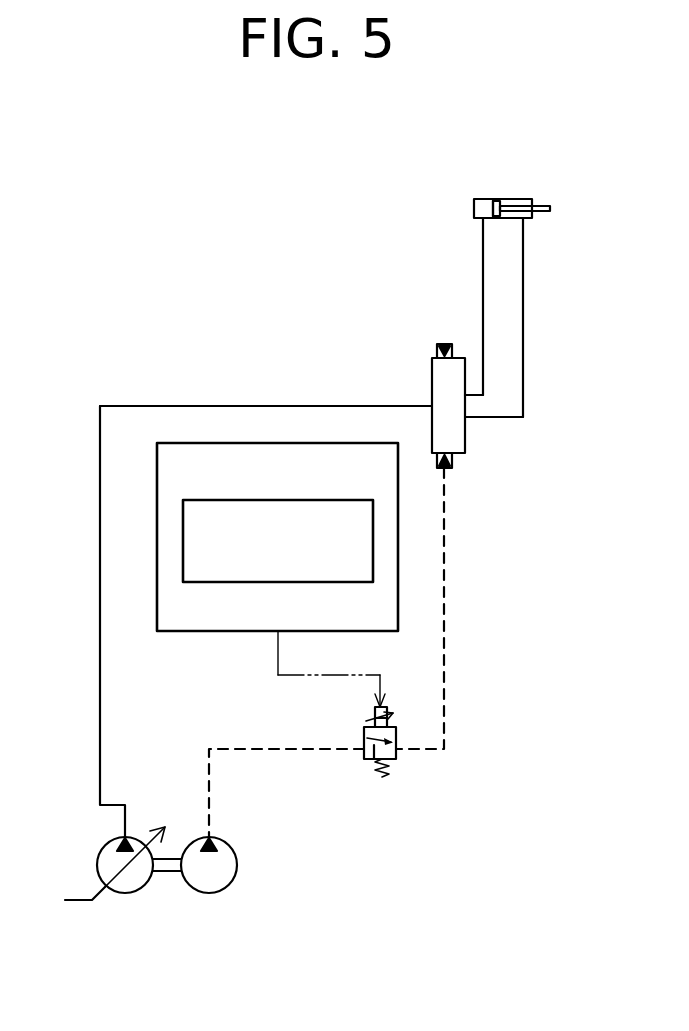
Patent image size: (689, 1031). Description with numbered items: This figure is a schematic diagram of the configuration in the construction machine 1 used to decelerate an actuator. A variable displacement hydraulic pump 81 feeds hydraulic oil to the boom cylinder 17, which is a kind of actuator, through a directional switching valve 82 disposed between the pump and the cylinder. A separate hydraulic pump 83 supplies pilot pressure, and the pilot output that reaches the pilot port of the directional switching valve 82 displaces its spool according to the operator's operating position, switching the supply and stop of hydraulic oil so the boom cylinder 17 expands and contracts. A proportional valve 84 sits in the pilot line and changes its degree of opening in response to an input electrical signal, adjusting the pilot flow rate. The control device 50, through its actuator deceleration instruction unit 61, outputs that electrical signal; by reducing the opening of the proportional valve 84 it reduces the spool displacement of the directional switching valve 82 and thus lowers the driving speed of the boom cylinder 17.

The construction machine 1 is at (251, 200).
The boom cylinder 17 is at (500, 199).
The control device 50 is at (277, 585).
The actuator deceleration instruction unit 61 is at (322, 582).
The variable displacement hydraulic pump 81 is at (130, 893).
The directional switching valve 82 is at (460, 453).
The hydraulic pump 83 is at (209, 893).
The proportional valve 84 is at (390, 784).